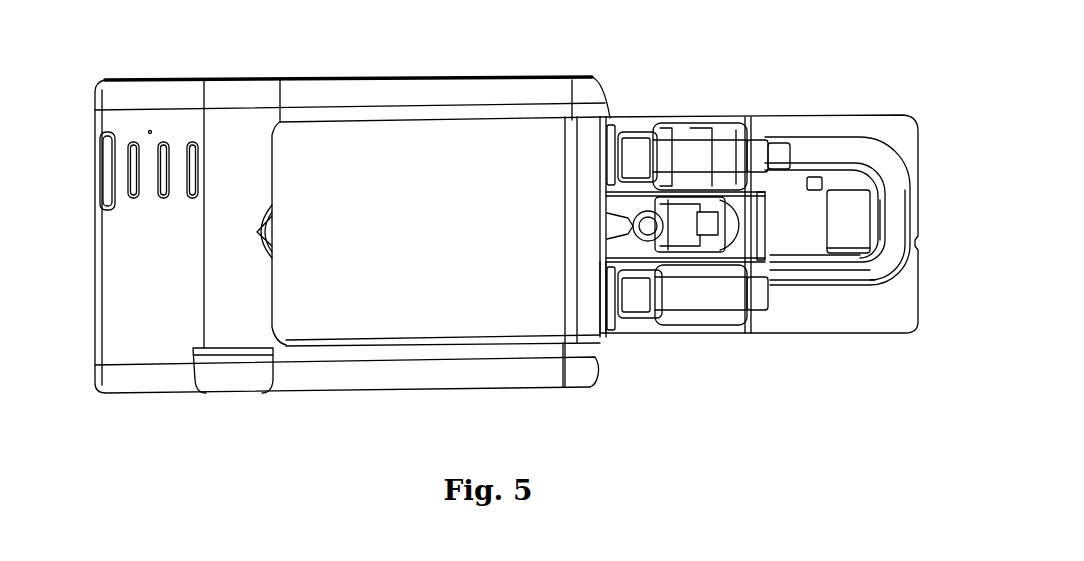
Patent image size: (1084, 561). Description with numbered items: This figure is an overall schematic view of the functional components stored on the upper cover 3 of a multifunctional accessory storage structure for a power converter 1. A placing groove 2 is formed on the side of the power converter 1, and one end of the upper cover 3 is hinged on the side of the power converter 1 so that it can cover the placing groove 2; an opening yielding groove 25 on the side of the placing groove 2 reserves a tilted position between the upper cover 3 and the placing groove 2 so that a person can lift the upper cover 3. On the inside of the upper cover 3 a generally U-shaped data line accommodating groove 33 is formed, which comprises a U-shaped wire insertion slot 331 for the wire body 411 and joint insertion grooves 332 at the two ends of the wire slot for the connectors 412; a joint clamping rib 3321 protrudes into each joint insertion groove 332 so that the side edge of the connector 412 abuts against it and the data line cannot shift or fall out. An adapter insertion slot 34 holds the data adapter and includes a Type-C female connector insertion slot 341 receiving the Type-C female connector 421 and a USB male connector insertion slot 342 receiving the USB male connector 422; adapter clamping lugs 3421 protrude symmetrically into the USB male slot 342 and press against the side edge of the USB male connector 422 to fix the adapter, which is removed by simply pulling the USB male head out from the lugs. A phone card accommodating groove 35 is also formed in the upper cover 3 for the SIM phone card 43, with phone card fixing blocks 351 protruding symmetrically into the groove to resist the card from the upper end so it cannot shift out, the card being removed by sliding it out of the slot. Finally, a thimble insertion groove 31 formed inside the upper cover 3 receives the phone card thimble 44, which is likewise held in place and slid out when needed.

The power converter 1 is at (340, 93).
The placing groove 2 is at (432, 137).
The upper cover 3 is at (893, 115).
The opening yielding groove 25 is at (262, 233).
The thimble insertion groove 31 is at (614, 127).
The data line accommodating groove 33 is at (742, 130).
The adapter insertion slot 34 is at (815, 178).
The phone card accommodating groove 35 is at (716, 248).
The SIM phone card 43 is at (652, 320).
The phone card thimble 44 is at (622, 333).
The wire insertion slot 331 is at (643, 165).
The joint insertion groove 332 is at (740, 135).
The Type-C female connector insertion slot 341 is at (752, 265).
The USB male connector insertion slot 342 is at (815, 262).
The phone card fixing block 351 is at (672, 262).
The wire body 411 is at (878, 162).
The connector 412 is at (707, 130).
The Type-C female connector 421 is at (843, 242).
The USB male connector 422 is at (793, 240).
The joint clamping rib 3321 is at (673, 128).
The adapter clamping lug 3421 is at (770, 140).